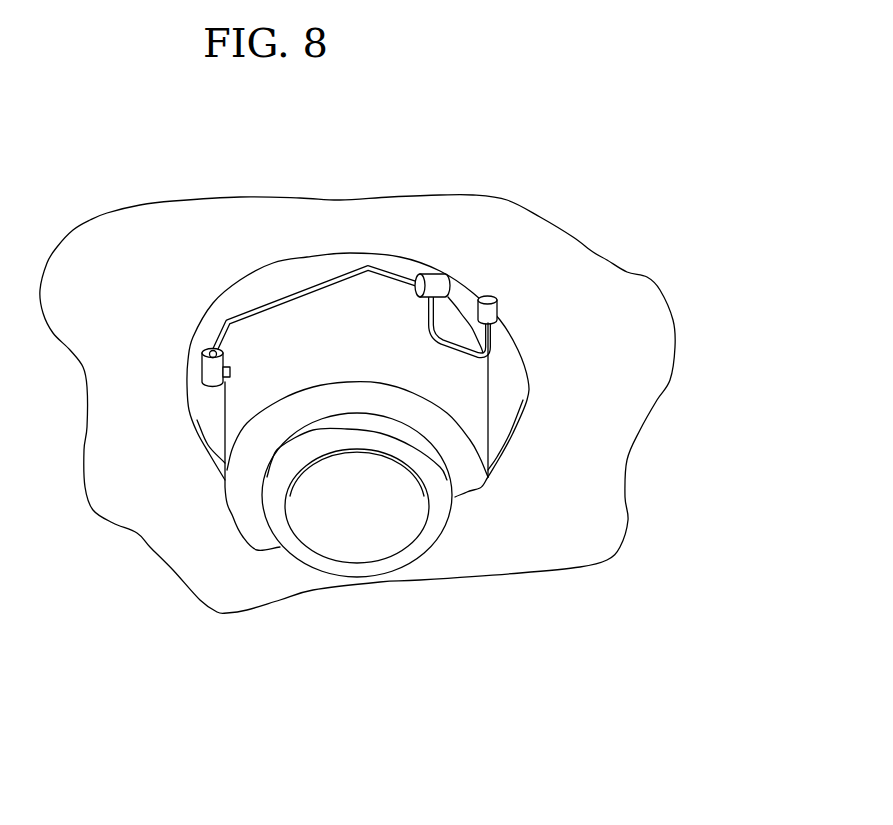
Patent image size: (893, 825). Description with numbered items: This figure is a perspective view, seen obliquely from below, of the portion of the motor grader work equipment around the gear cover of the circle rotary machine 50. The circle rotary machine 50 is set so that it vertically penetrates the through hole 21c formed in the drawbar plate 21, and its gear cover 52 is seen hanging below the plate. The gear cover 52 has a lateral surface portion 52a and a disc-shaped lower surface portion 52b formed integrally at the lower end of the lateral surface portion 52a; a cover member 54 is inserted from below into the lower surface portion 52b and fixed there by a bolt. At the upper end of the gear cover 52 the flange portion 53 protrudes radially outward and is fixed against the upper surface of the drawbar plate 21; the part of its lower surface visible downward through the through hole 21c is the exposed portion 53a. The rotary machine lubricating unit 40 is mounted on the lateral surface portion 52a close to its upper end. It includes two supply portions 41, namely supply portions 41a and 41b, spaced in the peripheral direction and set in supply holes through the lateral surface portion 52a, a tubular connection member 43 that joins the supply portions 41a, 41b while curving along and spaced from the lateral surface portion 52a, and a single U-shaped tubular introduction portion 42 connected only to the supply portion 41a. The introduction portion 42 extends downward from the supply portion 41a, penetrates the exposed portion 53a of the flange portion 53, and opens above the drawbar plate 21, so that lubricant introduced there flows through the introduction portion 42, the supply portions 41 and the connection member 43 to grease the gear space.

The drawbar plate 21 is at (603, 493).
The through hole 21c is at (205, 393).
The rotary machine lubricating unit 40 is at (374, 268).
The supply portion 41 is at (346, 256).
The supply portion 41a is at (434, 280).
The supply portion 41b is at (200, 377).
The introduction portion 42 is at (523, 313).
The connection member 43 is at (368, 263).
The circle rotary machine 50 is at (450, 486).
The gear cover 52 is at (300, 550).
The lateral surface portion 52a is at (243, 395).
The lower surface portion 52b is at (247, 513).
The flange portion 53 is at (487, 375).
The exposed portion 53a is at (511, 374).
The cover member 54 is at (408, 520).